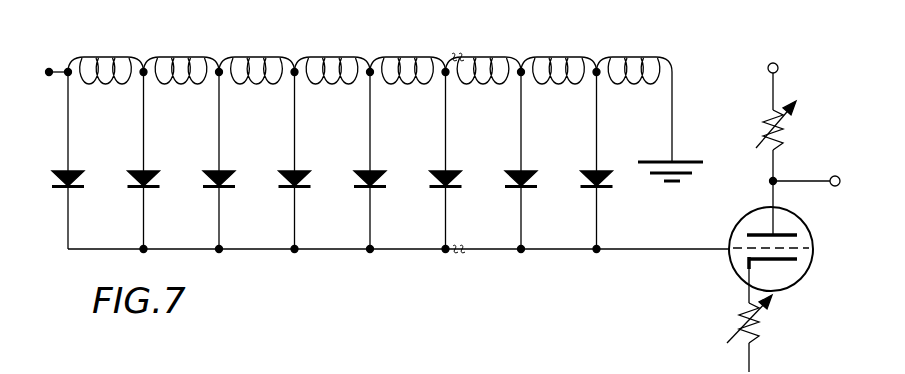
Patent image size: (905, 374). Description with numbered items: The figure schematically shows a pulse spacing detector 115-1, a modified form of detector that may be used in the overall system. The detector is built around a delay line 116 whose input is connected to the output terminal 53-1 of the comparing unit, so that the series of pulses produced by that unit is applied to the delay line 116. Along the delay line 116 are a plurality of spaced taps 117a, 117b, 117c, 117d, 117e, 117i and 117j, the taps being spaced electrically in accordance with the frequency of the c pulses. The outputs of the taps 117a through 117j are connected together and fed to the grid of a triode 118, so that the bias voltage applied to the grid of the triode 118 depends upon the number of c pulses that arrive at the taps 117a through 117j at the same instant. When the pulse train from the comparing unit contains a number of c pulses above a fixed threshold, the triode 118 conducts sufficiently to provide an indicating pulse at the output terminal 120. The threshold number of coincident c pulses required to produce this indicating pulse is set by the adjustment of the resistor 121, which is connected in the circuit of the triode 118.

The output terminal 53-1 is at (52, 68).
The delay line 116 is at (152, 58).
The pulse spacing detector 115-1 is at (547, 58).
The tap 117a is at (70, 76).
The tap 117b is at (146, 76).
The tap 117c is at (221, 76).
The tap 117d is at (296, 76).
The tap 117e is at (372, 76).
The tap 117i is at (523, 76).
The tap 117j is at (598, 76).
The triode 118 is at (738, 254).
The terminal 120 is at (833, 177).
The resistor 121 is at (763, 124).